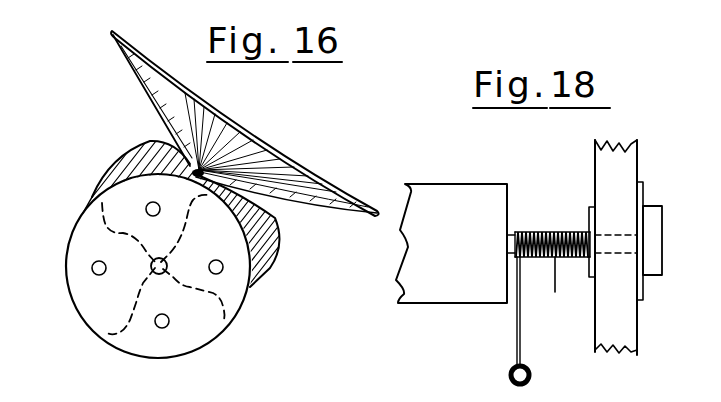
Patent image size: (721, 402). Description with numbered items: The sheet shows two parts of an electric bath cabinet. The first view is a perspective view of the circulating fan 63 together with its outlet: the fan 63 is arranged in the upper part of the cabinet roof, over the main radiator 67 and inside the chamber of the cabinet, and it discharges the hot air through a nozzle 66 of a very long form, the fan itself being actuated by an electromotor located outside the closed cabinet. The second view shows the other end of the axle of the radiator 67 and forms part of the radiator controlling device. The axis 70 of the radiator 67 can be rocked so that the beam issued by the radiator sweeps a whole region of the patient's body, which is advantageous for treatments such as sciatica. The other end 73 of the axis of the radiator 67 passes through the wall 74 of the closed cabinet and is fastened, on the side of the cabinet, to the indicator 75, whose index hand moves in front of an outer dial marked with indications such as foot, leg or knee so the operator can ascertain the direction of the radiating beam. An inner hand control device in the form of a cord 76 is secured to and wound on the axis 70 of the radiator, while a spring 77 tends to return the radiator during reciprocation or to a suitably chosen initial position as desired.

In FIG. 16, the circulating fan 63 is at (100, 309).
In FIG. 16, the nozzle 66 is at (248, 137).
In FIG. 18, the main radiator 67 is at (392, 295).
In FIG. 18, the axis of the radiator 70 is at (513, 243).
In FIG. 18, the other end of the axis 73 is at (538, 232).
In FIG. 18, the wall of the closed cabinet 74 is at (607, 163).
In FIG. 18, the indicator 75 is at (653, 262).
In FIG. 18, the cord 76 is at (522, 330).
In FIG. 18, the spring 77 is at (561, 289).